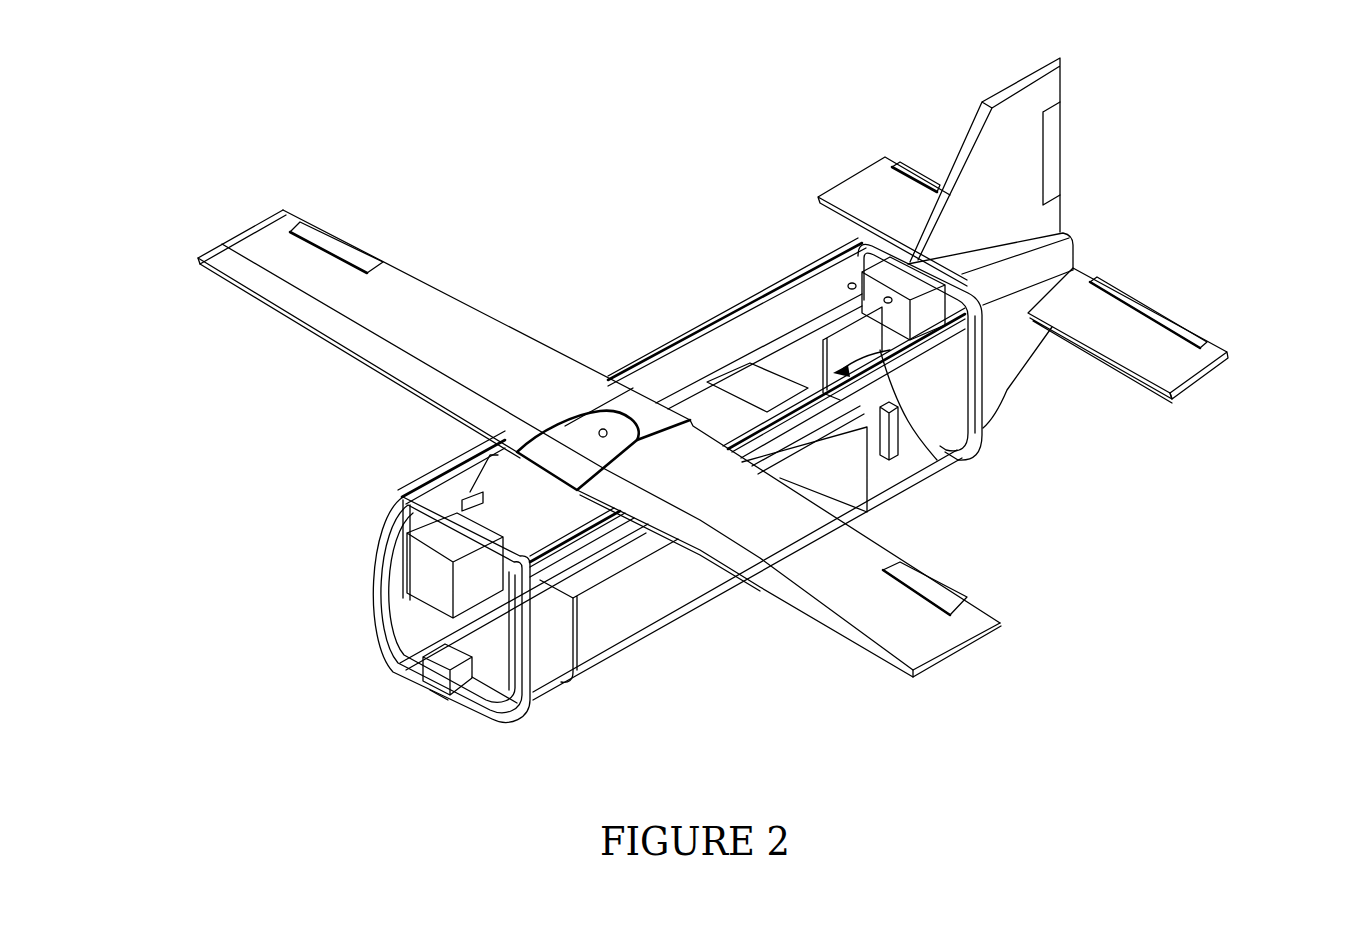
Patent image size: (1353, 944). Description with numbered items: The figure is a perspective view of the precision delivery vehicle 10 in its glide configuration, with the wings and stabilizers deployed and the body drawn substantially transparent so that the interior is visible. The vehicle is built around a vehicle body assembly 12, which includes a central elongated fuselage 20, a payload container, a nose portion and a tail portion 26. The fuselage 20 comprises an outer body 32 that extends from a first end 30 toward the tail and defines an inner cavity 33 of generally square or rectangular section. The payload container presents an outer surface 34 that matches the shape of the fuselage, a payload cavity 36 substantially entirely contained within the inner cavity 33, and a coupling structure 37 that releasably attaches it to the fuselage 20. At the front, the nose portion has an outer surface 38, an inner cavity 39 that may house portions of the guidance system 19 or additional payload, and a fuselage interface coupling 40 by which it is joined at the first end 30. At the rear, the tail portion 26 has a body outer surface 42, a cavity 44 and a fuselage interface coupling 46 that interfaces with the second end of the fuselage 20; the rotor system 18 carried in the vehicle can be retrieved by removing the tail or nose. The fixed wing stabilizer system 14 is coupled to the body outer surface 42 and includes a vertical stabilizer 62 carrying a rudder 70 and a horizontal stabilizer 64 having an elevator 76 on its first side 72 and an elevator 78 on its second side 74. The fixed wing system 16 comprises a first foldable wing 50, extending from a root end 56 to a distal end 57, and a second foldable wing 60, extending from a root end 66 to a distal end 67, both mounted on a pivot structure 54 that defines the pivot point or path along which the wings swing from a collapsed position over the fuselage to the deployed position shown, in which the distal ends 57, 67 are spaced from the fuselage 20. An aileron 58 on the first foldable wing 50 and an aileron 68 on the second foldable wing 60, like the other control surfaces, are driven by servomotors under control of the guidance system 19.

The precision delivery vehicle 10 is at (628, 238).
The vehicle body assembly 12 is at (918, 496).
The fixed wing stabilizer system 14 is at (1110, 253).
The fixed wing system 16 is at (845, 650).
The rotor system 18 is at (760, 337).
The guidance system 19 is at (437, 696).
The central elongated fuselage 20 is at (672, 345).
The tail portion 26 is at (1073, 240).
The first end 30 is at (533, 714).
The outer body 32 is at (822, 292).
The inner cavity 33 is at (940, 458).
The outer surface 34 is at (632, 648).
The payload cavity 36 is at (728, 410).
The coupling structure 37 is at (568, 690).
The outer surface 38 is at (383, 578).
The inner cavity 39 is at (420, 677).
The fuselage interface coupling 40 is at (408, 512).
The body outer surface 42 is at (1018, 377).
The cavity 44 is at (882, 282).
The fuselage interface coupling 46 is at (978, 440).
The first foldable wing 50 is at (222, 285).
The pivot structure 54 is at (512, 453).
The root end 56 is at (606, 420).
The distal end 57 is at (212, 232).
The aileron 58 is at (348, 242).
The second foldable wing 60 is at (992, 613).
The vertical stabilizer 62 is at (1083, 80).
The horizontal stabilizer 64 is at (1228, 334).
The root end 66 is at (643, 447).
The distal end 67 is at (953, 668).
The aileron 68 is at (942, 580).
The rudder 70 is at (1063, 152).
The first side 72 is at (856, 176).
The second side 74 is at (1200, 385).
The elevator 76 is at (922, 178).
The elevator 78 is at (1150, 310).